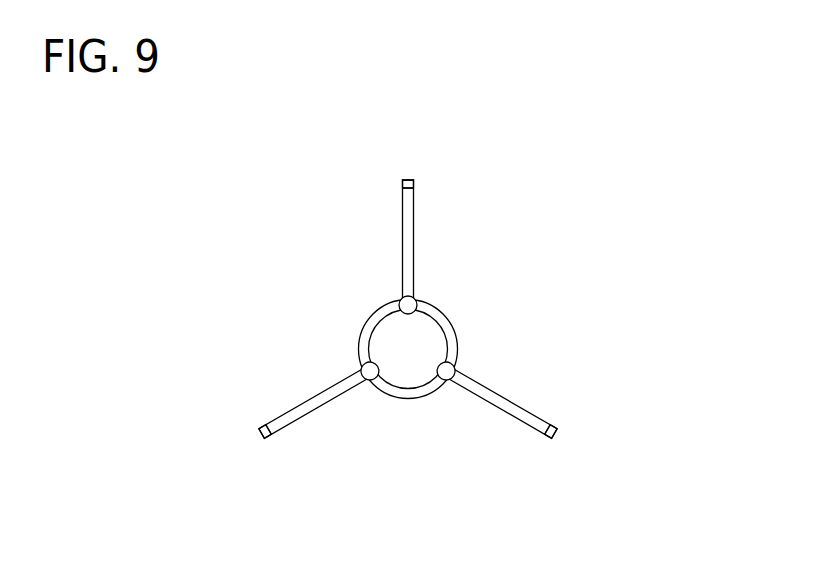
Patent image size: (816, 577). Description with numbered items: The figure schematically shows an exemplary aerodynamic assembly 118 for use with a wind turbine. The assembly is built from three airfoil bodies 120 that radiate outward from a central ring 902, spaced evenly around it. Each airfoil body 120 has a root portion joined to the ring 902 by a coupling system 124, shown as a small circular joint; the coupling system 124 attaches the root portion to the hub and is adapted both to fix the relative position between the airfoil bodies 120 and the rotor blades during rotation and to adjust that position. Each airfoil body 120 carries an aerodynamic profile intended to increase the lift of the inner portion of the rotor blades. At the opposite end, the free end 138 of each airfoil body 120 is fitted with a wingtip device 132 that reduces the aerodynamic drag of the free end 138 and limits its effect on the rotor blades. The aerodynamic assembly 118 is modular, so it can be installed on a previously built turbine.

The aerodynamic assembly 118 is at (254, 259).
The airfoil body 120 is at (414, 248).
The coupling system 124 is at (401, 300).
The wingtip device 132 is at (414, 182).
The free end 138 is at (392, 189).
The ring 902 is at (437, 312).